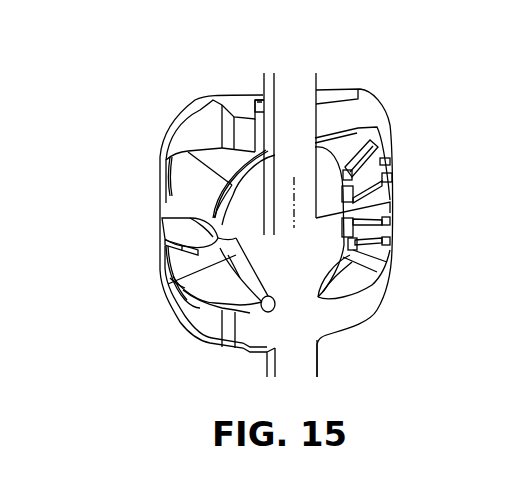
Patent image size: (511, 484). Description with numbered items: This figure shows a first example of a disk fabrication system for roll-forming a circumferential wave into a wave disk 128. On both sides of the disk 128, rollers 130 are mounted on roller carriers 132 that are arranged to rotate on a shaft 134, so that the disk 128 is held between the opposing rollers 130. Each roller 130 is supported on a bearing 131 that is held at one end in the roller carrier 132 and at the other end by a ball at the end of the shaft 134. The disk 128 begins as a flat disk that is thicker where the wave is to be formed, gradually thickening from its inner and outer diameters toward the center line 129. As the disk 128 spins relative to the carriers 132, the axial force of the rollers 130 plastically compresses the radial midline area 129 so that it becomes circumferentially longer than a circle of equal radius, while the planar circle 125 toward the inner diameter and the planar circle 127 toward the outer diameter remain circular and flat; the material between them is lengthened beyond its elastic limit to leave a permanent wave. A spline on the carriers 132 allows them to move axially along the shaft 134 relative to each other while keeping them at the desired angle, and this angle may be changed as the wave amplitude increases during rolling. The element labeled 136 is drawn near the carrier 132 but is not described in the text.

The planar circle section toward the ID 125 is at (172, 282).
The planar circle section toward the OD 127 is at (232, 262).
The wave disk 128 is at (178, 225).
The center line / radial midline area 129 is at (163, 243).
The roller 130 is at (185, 175).
The bearing 131 is at (377, 233).
The roller carrier 132 is at (180, 138).
The shaft 134 is at (317, 78).
The clip 136 is at (258, 99).